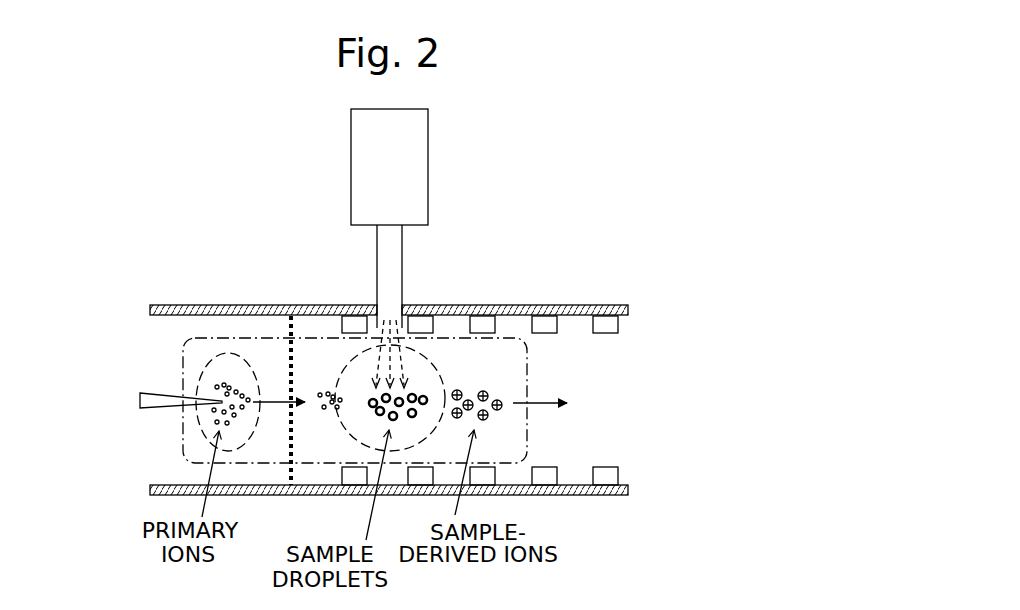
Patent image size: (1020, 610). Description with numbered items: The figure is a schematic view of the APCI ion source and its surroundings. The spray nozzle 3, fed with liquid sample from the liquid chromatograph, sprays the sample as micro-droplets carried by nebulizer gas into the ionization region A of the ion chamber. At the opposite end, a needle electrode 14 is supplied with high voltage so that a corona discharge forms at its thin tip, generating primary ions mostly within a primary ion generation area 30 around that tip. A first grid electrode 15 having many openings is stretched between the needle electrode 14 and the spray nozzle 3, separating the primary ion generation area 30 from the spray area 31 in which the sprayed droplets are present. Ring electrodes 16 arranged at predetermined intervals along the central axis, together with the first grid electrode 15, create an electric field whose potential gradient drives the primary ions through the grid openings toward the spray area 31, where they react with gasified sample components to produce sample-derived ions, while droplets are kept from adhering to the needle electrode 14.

The spray nozzle 3 is at (403, 280).
The needle electrode 14 is at (152, 393).
The first grid electrode 15 is at (287, 305).
The ring electrodes 16 is at (343, 486).
The primary ion generation area 30 is at (225, 352).
The spray area 31 is at (357, 357).
The ionization region A is at (508, 338).